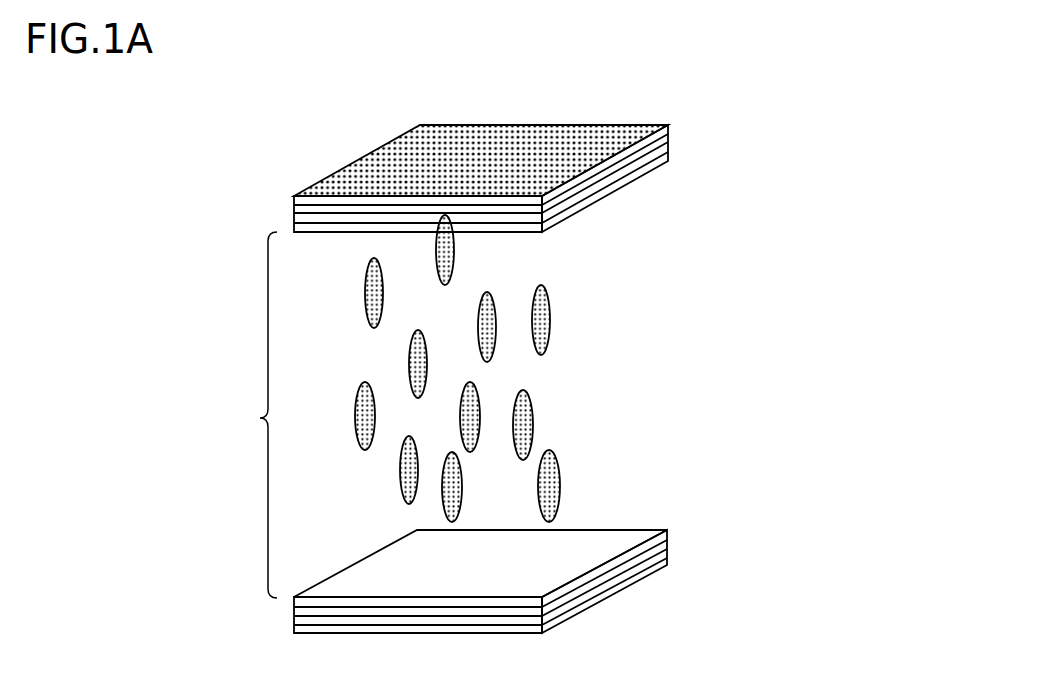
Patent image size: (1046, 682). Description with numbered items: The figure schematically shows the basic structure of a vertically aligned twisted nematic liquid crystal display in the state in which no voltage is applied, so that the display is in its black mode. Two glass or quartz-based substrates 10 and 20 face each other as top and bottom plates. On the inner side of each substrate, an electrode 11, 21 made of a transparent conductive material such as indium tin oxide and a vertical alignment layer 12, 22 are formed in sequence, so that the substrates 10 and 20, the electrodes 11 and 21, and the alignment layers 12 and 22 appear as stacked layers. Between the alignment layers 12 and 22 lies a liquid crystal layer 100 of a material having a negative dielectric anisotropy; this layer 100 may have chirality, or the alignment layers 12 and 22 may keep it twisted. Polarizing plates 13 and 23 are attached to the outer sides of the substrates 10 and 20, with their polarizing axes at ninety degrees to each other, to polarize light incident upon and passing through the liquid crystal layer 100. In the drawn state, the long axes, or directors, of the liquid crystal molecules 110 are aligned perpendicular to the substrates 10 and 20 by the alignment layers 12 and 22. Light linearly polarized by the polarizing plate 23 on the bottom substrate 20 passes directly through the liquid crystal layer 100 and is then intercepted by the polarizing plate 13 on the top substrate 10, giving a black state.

The substrate 10 is at (522, 159).
The electrode 11 is at (643, 162).
The vertical alignment layer 12 is at (613, 187).
The polarizing plate 13 is at (627, 133).
The substrate 20 is at (518, 551).
The electrode 21 is at (643, 553).
The vertical alignment layer 22 is at (620, 540).
The polarizing plate 23 is at (618, 587).
The liquid crystal layer 100 is at (241, 415).
The liquid crystal molecules 110 is at (532, 420).